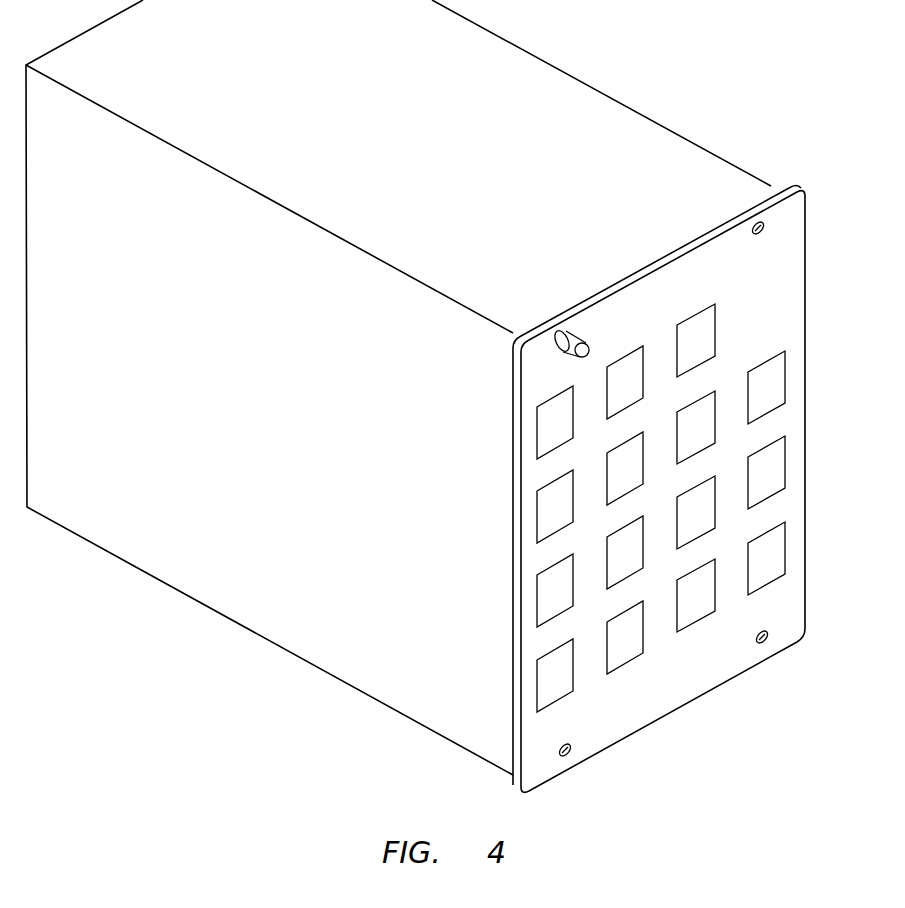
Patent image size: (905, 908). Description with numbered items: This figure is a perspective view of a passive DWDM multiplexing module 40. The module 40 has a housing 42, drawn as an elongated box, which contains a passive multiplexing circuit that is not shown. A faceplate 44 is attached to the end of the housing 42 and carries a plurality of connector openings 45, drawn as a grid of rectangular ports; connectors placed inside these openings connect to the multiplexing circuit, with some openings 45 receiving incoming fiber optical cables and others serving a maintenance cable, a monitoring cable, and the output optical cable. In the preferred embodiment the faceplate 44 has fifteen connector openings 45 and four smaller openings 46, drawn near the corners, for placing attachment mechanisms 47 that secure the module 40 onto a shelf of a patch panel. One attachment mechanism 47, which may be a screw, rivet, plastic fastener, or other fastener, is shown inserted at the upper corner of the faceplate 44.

The passive DWDM multiplexing module 40 is at (440, 396).
The housing 42 is at (350, 156).
The faceplate 44 is at (683, 488).
The connector openings 45 is at (692, 620).
The openings 46 is at (765, 224).
The attachment mechanisms 47 is at (590, 348).